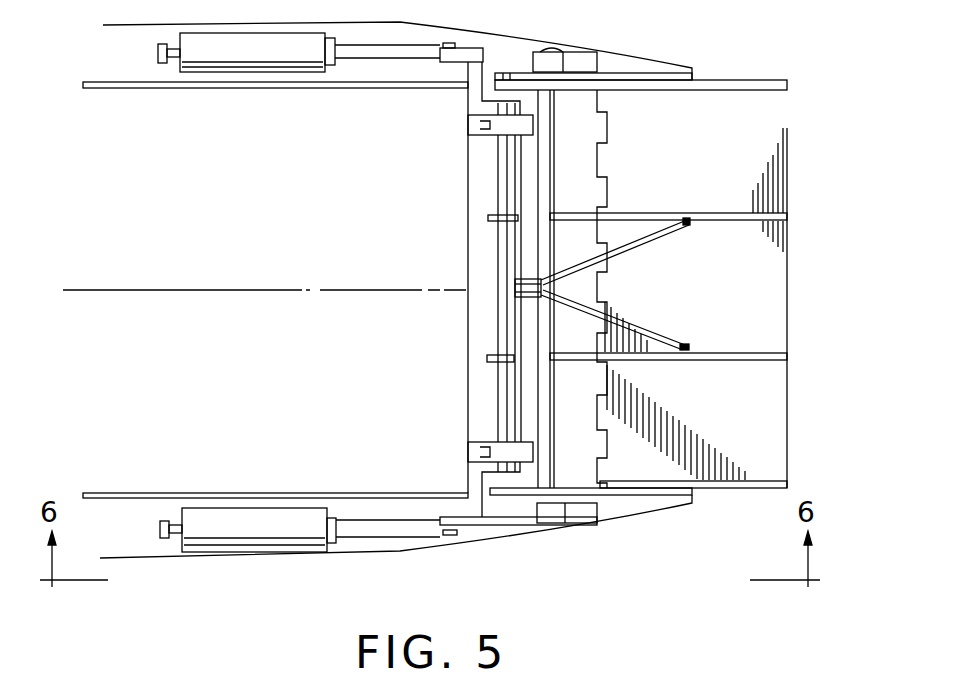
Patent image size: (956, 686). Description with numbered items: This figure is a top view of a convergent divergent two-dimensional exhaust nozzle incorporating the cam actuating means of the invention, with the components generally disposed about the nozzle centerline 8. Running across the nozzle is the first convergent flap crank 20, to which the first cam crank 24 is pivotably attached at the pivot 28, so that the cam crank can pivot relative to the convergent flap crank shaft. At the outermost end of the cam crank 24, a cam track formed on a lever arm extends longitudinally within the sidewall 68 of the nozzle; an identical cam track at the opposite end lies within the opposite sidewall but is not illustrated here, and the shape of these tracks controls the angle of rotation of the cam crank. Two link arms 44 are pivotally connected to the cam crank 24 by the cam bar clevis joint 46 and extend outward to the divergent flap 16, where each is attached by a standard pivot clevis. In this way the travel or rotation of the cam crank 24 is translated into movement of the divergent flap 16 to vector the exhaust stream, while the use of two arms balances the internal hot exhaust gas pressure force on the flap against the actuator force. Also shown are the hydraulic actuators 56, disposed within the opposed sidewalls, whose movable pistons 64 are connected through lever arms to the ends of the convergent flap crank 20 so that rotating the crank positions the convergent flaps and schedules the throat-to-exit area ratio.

The nozzle centerline 8 is at (270, 288).
The divergent flap 16 is at (780, 405).
The first convergent flap crank 20 is at (483, 368).
The first cam crank 24 is at (545, 411).
The pivot 28 is at (487, 440).
The link arm 44 is at (640, 241).
The cam bar clevis joint 46 is at (520, 281).
The hydraulic actuator 56 is at (240, 532).
The piston 64 is at (415, 528).
The sidewall 68 is at (370, 488).